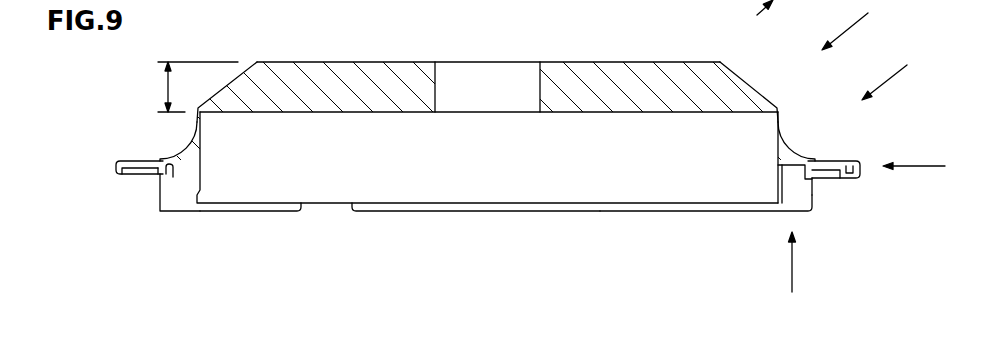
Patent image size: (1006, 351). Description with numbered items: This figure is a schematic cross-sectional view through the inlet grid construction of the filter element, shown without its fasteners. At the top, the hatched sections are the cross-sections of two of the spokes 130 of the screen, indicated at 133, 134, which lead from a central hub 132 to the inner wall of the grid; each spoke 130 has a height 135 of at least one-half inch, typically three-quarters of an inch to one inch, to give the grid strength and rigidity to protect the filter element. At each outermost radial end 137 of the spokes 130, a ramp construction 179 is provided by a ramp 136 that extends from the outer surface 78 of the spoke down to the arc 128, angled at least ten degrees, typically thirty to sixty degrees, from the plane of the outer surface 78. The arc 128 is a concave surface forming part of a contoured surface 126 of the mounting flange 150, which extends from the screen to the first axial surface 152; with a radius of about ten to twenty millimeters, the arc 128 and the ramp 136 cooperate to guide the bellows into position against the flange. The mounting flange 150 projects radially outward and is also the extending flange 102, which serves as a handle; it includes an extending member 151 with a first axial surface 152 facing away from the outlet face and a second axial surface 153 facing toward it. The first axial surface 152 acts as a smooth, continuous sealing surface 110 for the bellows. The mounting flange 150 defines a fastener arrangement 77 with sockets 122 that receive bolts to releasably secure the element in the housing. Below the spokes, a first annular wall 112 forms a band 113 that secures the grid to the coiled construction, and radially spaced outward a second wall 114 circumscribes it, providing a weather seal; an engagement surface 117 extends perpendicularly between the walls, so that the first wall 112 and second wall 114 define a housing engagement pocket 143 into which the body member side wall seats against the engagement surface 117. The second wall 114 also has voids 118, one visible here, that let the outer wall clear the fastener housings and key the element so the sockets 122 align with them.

The fastener arrangement 77 is at (706, 260).
The outer surface 78 is at (425, 62).
The extending flange 102 is at (118, 158).
The sealing surface 110 is at (185, 145).
The first annular wall 112 is at (199, 192).
The band 113 is at (776, 184).
The second wall 114 is at (815, 198).
The engagement surface 117 is at (187, 167).
The void 118 is at (349, 206).
The socket 122 is at (830, 178).
The contoured surface 126 is at (906, 74).
The arc 128 is at (790, 143).
The spoke 130 is at (370, 62).
The central hub 132 is at (538, 73).
The spoke cross-section 133 is at (643, 62).
The spoke cross-section 134 is at (313, 62).
The height 135 is at (164, 83).
The ramp 136 is at (750, 85).
The outermost radial end 137 is at (722, 60).
The housing engagement pocket 143 is at (172, 166).
The mounting flange 150 is at (902, 167).
The extending member 151 is at (835, 158).
The first axial surface 152 is at (140, 160).
The second axial surface 153 is at (127, 170).
The ramp construction 179 is at (834, 25).